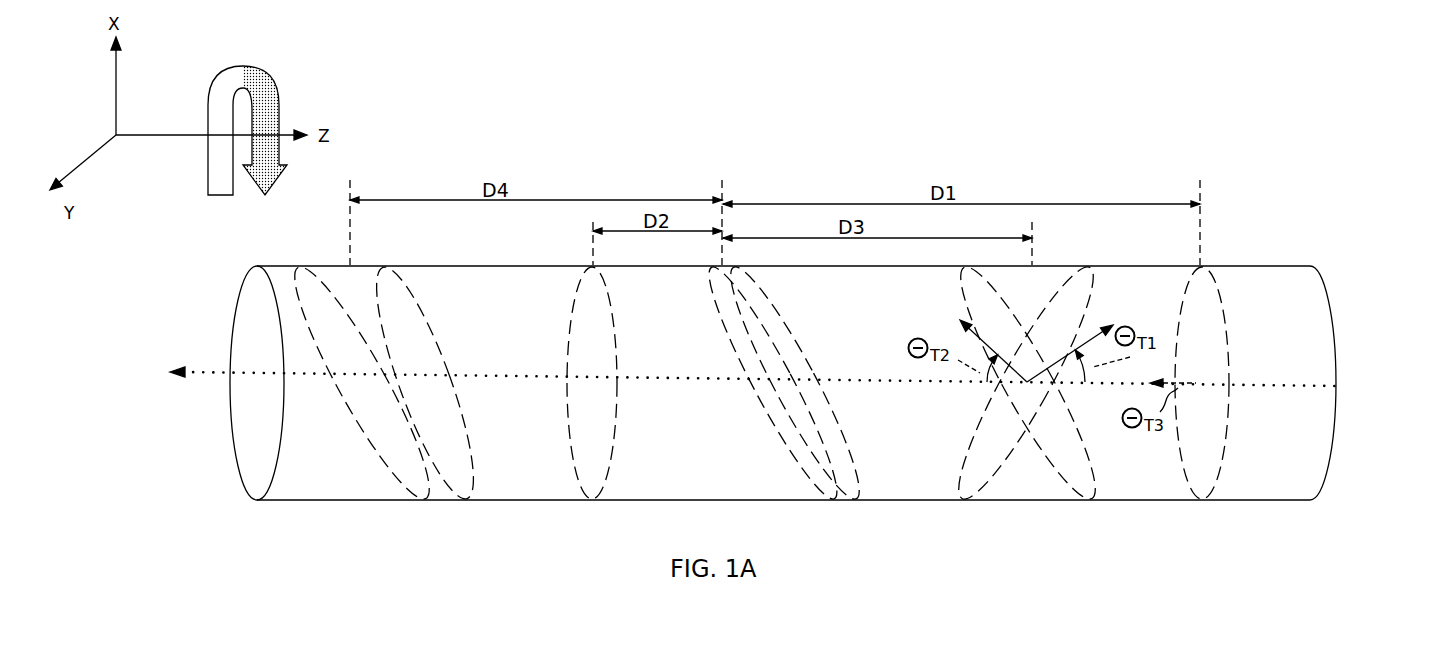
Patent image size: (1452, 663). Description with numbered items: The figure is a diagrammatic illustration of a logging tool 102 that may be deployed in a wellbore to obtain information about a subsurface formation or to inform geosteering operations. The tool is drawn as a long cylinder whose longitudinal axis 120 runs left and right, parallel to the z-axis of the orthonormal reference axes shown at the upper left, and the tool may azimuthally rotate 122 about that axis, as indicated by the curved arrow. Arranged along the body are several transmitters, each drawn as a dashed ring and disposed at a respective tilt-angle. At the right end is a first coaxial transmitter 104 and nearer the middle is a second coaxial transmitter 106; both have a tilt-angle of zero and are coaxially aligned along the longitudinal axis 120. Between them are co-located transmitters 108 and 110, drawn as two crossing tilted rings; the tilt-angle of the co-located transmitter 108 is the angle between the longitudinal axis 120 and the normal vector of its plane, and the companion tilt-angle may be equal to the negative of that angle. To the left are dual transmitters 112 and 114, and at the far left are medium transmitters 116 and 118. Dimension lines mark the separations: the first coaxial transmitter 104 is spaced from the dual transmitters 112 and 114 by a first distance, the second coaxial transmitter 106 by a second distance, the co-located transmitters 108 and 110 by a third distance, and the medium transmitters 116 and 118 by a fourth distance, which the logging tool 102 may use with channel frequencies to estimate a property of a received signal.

The logging tool 102 is at (887, 501).
The first coaxial transmitter 104 is at (1220, 287).
The second coaxial transmitter 106 is at (612, 448).
The co-located transmitter 108 is at (1018, 303).
The co-located transmitter 110 is at (967, 501).
The dual transmitter 112 is at (800, 350).
The dual transmitter 114 is at (720, 332).
The medium transmitter 116 is at (388, 270).
The medium transmitter 118 is at (300, 270).
The longitudinal axis 120 is at (1335, 387).
The azimuthal rotation 122 is at (278, 107).